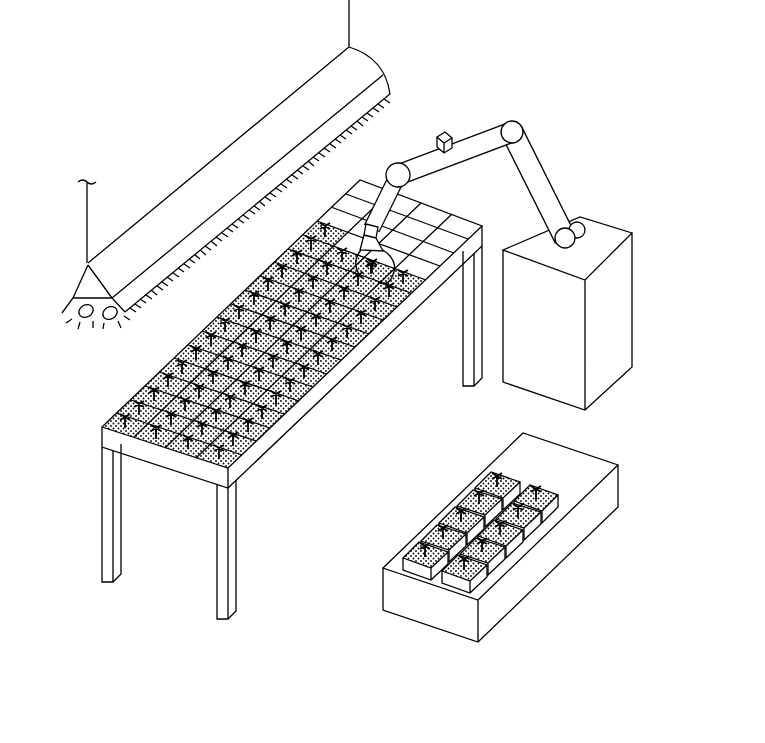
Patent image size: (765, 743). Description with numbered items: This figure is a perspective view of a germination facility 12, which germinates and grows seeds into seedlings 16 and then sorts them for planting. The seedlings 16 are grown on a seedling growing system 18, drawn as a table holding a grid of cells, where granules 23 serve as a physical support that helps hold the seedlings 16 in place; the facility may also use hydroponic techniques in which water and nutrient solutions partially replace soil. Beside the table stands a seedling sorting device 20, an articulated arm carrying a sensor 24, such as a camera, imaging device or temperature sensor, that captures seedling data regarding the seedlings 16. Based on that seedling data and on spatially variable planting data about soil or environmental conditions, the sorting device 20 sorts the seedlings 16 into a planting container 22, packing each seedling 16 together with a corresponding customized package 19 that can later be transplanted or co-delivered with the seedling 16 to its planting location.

The germination facility 12 is at (554, 53).
The seedlings 16 is at (117, 408).
The seedling growing system 18 is at (84, 441).
The customized package 19 is at (557, 506).
The seedling sorting device 20 is at (538, 162).
The planting container 22 is at (607, 495).
The granules 23 is at (110, 418).
The sensor 24 is at (447, 134).